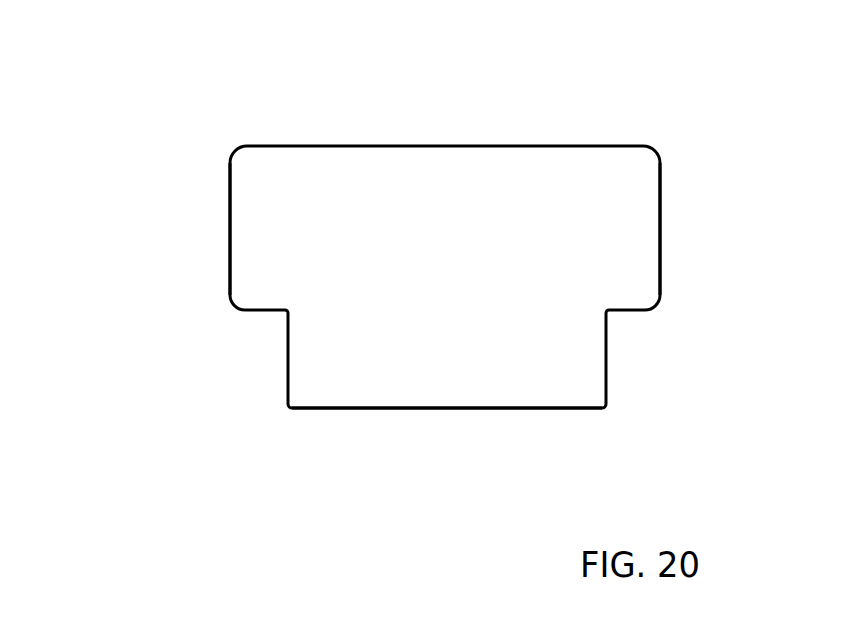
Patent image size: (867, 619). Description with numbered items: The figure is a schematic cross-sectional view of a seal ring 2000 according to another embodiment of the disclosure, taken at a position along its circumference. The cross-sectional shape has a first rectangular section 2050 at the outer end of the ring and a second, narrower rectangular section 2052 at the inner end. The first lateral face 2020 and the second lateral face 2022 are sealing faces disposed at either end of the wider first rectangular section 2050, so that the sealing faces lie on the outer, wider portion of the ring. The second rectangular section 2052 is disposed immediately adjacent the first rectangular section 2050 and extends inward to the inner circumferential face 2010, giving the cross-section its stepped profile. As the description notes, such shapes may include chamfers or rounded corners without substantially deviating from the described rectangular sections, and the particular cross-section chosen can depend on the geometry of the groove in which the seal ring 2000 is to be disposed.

The seal ring 2000 is at (137, 72).
The first rectangular section 2050 is at (482, 250).
The second rectangular section 2052 is at (483, 378).
The second lateral face 2022 is at (229, 243).
The first lateral face 2020 is at (661, 251).
The inner circumferential face 2010 is at (449, 409).